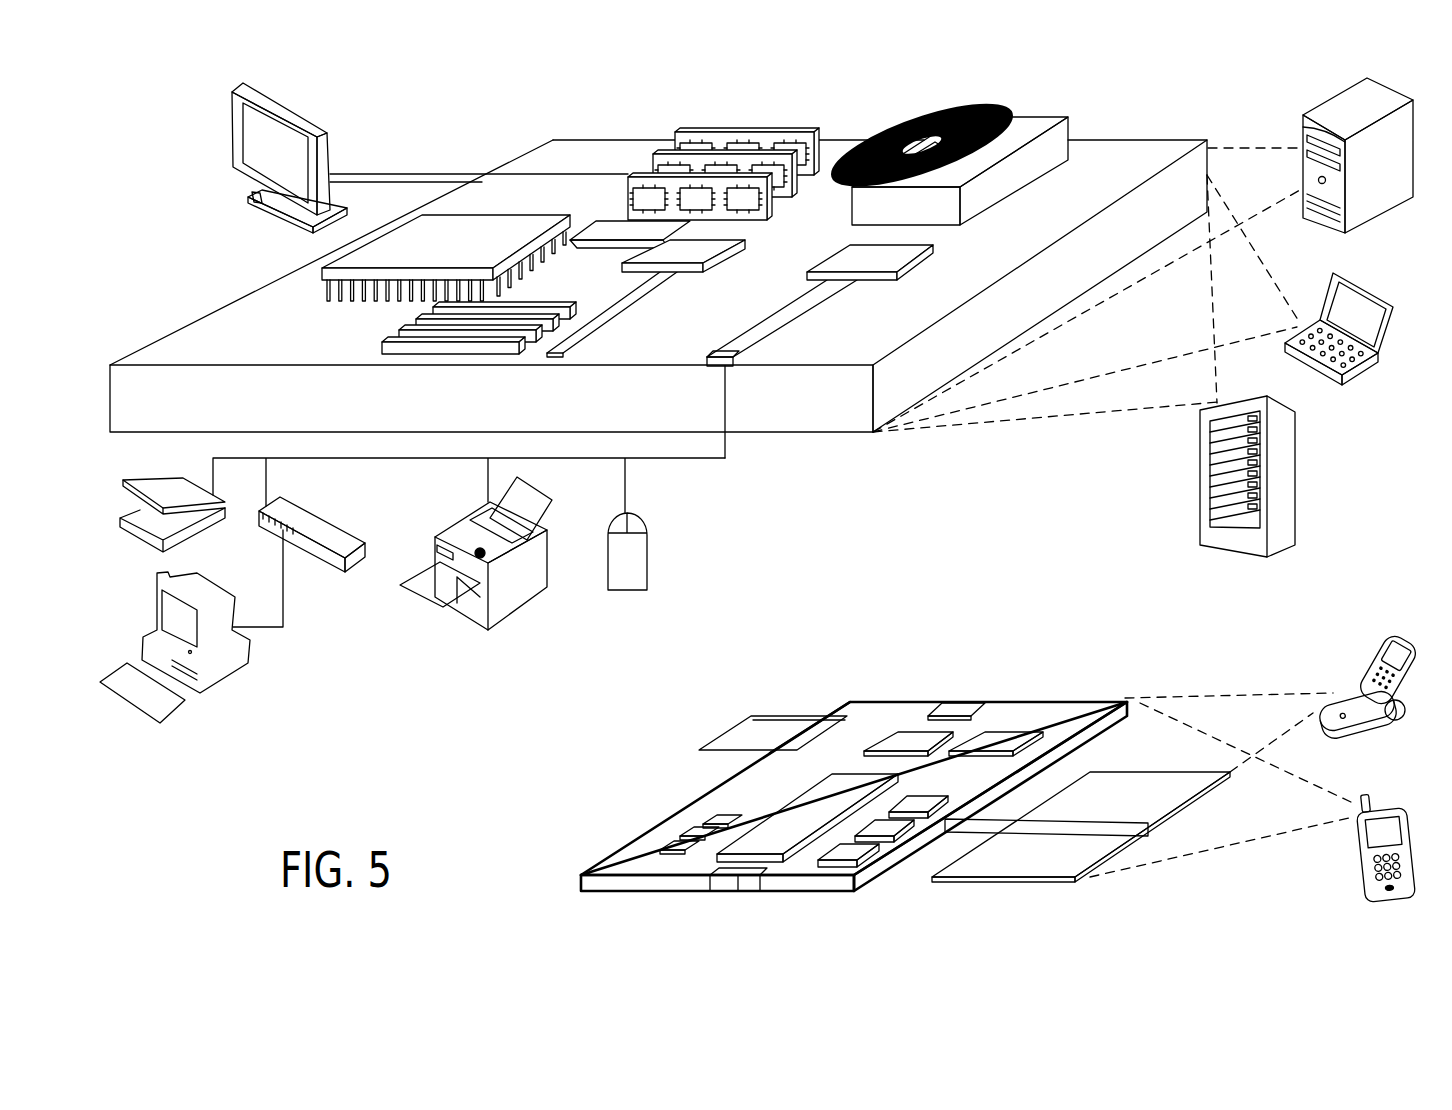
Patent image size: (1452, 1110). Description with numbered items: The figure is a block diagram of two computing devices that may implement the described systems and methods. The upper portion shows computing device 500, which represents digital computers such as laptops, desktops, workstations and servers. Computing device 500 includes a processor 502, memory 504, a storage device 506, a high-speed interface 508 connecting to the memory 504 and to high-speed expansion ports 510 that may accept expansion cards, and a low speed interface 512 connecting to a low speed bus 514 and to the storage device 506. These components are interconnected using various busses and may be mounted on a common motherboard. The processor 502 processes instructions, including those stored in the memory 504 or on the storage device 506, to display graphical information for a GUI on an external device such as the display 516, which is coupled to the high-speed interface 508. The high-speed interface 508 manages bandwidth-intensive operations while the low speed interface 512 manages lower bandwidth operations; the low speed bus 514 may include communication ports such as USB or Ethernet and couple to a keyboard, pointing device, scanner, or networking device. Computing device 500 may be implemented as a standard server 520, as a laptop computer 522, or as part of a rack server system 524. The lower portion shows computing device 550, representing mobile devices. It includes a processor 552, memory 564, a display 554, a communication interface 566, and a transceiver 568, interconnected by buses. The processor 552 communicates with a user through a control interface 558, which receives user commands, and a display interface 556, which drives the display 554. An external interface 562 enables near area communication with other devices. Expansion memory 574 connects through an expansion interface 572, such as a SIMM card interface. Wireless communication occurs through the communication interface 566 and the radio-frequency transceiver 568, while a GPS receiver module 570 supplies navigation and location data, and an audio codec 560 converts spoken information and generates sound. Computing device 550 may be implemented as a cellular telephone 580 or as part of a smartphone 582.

The computing device 500 is at (458, 108).
The processor 502 is at (322, 279).
The memory 504 is at (687, 132).
The storage device 506 is at (935, 130).
The high-speed interface 508 is at (657, 254).
The high-speed expansion ports 510 is at (400, 327).
The low speed interface 512 is at (873, 258).
The low speed bus 514 is at (735, 366).
The display 516 is at (233, 93).
The standard server 520 is at (1302, 124).
The laptop computer 522 is at (1340, 278).
The rack server system 524 is at (1203, 503).
The computing device 550 is at (830, 672).
The processor 552 is at (778, 862).
The display 554 is at (1078, 882).
The display interface 556 is at (870, 868).
The control interface 558 is at (903, 838).
The audio codec 560 is at (971, 837).
The external interface 562 is at (738, 885).
The memory 564 is at (682, 832).
The communication interface 566 is at (910, 740).
The transceiver 568 is at (997, 741).
The GPS receiver module 570 is at (967, 697).
The expansion interface 572 is at (826, 708).
The expansion memory 574 is at (737, 714).
The cellular telephone 580 is at (1380, 634).
The smartphone 582 is at (1362, 790).